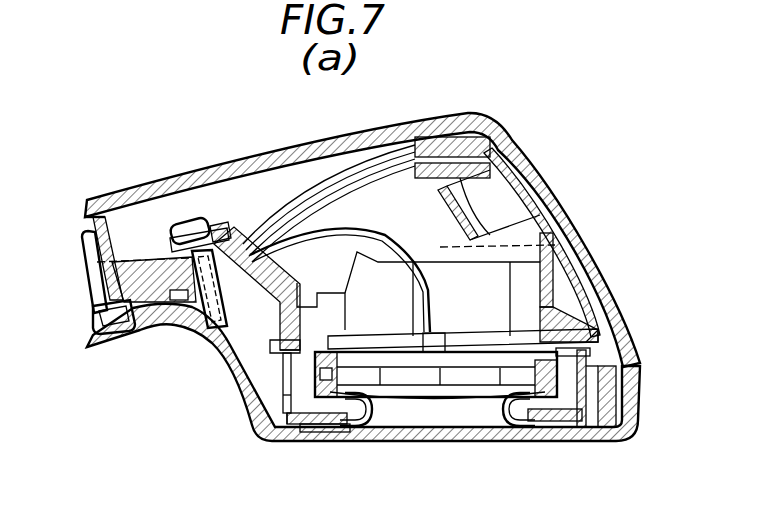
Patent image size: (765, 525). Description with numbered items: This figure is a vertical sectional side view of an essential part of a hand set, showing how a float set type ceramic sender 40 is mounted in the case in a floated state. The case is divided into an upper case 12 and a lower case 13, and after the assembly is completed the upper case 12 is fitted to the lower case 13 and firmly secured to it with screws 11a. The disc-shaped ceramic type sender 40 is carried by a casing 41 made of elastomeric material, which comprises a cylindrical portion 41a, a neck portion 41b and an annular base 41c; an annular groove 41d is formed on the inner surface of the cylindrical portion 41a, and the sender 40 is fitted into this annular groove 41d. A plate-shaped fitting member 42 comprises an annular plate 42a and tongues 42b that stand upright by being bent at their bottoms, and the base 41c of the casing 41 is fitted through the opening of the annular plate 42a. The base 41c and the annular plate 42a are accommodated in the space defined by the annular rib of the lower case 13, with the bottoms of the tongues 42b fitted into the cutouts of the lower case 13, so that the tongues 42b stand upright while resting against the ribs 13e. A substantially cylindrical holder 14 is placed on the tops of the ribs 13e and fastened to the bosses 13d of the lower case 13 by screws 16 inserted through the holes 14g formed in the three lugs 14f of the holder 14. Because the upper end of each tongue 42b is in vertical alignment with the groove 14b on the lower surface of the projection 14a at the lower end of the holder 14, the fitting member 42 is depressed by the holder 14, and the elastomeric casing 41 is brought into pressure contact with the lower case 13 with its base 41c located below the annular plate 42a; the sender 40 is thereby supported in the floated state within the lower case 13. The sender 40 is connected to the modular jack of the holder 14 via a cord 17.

The screws 11a is at (90, 279).
The upper case 12 is at (431, 112).
The lower case 13 is at (624, 447).
The bosses 13d is at (152, 300).
The ribs 13e is at (608, 392).
The holder 14 is at (566, 274).
The projection 14a is at (598, 340).
The groove 14b is at (597, 330).
The lugs 14f is at (238, 240).
The holes 14g is at (210, 250).
The screws 16 is at (180, 232).
The cord 17 is at (355, 233).
The ceramic type sender 40 is at (440, 382).
The casing 41 is at (558, 422).
The cylindrical portion 41a is at (335, 424).
The neck portion 41b is at (382, 424).
The annular base 41c is at (525, 426).
The annular groove 41d is at (288, 420).
The fitting member 42 is at (603, 352).
The annular plate 42a is at (312, 432).
The tongues 42b is at (602, 404).